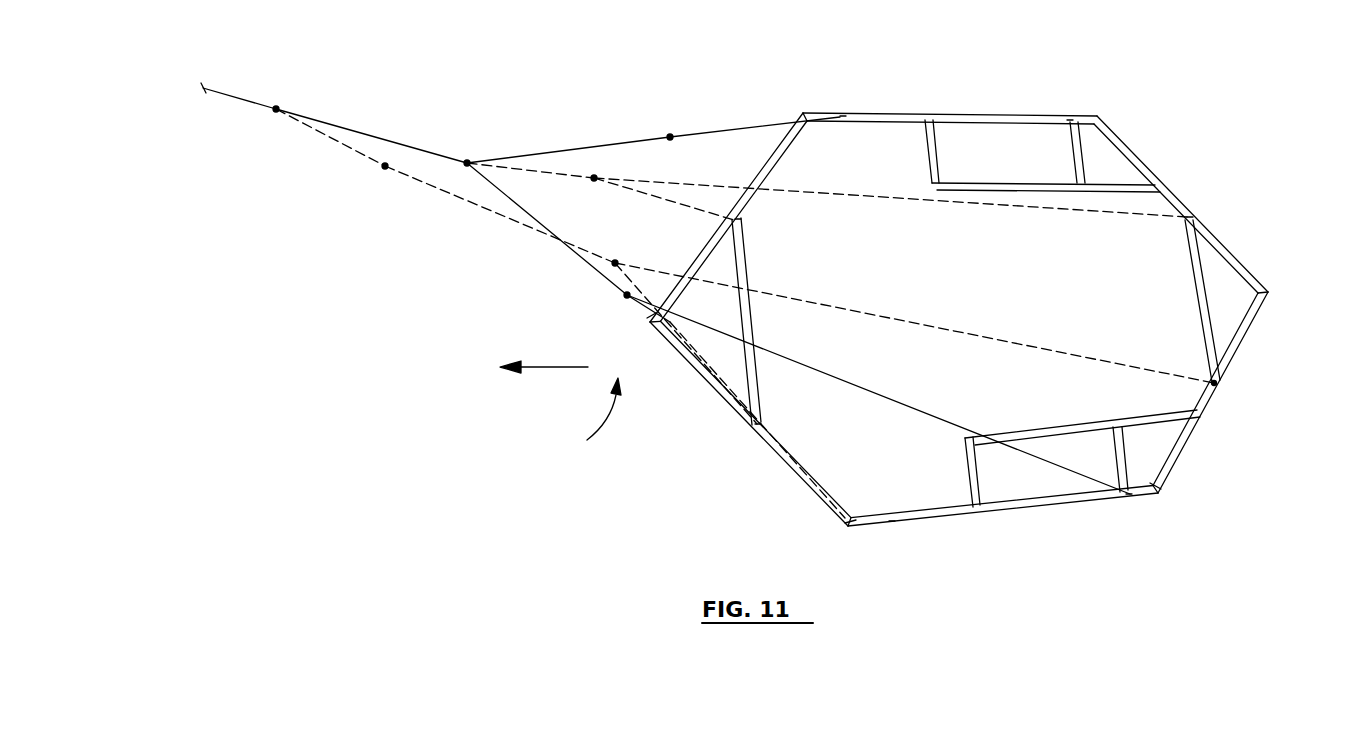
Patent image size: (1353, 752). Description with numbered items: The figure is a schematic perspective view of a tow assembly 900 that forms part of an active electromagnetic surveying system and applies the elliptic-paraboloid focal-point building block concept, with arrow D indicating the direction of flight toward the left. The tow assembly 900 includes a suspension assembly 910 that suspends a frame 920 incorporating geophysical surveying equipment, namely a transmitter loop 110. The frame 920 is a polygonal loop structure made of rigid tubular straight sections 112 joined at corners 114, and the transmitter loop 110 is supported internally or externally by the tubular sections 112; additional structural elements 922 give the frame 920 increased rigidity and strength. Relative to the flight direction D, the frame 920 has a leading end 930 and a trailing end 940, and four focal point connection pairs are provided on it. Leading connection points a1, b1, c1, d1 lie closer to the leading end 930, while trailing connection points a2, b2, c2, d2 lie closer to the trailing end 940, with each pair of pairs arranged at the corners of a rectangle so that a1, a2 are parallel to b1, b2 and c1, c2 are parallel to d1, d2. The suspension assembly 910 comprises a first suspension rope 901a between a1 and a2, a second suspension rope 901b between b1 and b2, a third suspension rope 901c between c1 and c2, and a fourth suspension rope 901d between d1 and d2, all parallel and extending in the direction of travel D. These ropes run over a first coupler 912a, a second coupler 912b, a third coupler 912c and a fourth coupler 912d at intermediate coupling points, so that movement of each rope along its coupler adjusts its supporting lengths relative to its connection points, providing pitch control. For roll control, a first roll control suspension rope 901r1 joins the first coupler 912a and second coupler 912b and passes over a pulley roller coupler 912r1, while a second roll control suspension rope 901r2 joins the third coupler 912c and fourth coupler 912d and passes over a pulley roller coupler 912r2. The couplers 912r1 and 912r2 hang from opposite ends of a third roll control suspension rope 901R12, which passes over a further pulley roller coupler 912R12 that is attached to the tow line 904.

The tow assembly 900 is at (1158, 83).
The transmitter loop 110 is at (1010, 513).
The rigid tubular straight sections 112 is at (1125, 147).
The vertices or corners 114 is at (843, 523).
The frame 920 is at (928, 101).
The additional structural elements 922 is at (938, 152).
The leading end 930 is at (649, 328).
The trailing end 940 is at (1268, 297).
The tow line 904 is at (220, 92).
The suspension assembly 910 is at (579, 417).
The pulley roller coupler 912R12 is at (278, 108).
The third roll control suspension rope 901R12 is at (403, 145).
The pulley roller coupler 912r1 is at (467, 162).
The pulley roller coupler 912r2 is at (386, 169).
The first roll control suspension rope 901r1 is at (595, 147).
The second roll control suspension rope 901r2 is at (455, 196).
The first coupler 912a is at (671, 137).
The first suspension rope 901a is at (750, 127).
The second coupler 912b is at (627, 300).
The second suspension rope 901b is at (893, 401).
The third coupler 912c is at (595, 181).
The third suspension rope 901c is at (890, 186).
The fourth coupler 912d is at (616, 262).
The fourth suspension rope 901d is at (975, 330).
The leading connection point a1 is at (843, 115).
The trailing connection point a2 is at (1070, 117).
The leading connection point b1 is at (892, 521).
The trailing connection point b2 is at (1128, 497).
The leading connection point c1 is at (740, 219).
The trailing connection point c2 is at (1193, 214).
The leading connection point d1 is at (758, 424).
The trailing connection point d2 is at (1217, 386).
The direction of flight D is at (544, 380).